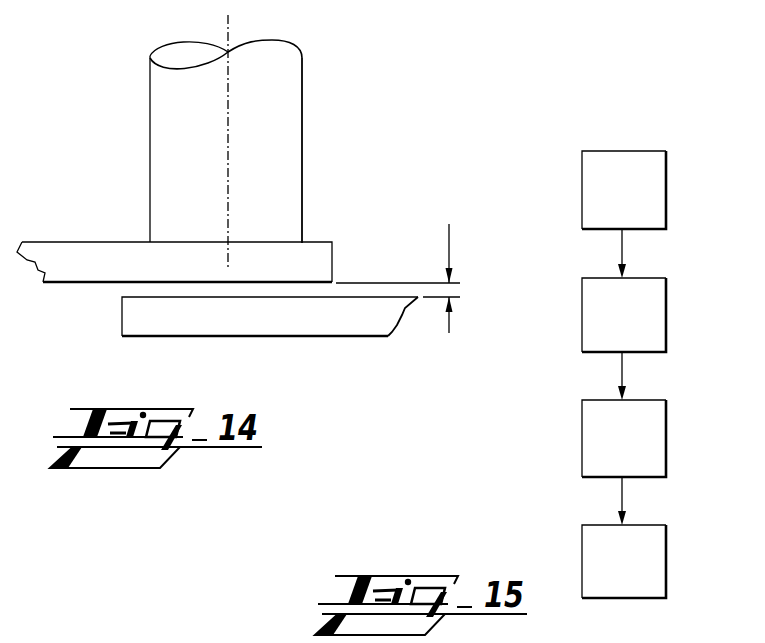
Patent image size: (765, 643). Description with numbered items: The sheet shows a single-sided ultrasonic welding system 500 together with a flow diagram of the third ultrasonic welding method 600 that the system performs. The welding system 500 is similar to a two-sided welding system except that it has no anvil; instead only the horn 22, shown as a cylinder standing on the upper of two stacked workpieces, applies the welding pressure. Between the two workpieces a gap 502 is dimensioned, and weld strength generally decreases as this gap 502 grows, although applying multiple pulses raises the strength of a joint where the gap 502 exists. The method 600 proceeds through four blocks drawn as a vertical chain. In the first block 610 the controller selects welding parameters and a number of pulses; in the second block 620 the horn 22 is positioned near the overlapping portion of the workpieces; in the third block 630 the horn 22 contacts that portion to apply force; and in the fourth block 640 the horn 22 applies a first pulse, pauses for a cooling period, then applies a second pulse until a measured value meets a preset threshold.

In FIG. 14, the horn 22 is at (208, 158).
In FIG. 14, the welding system 500 is at (219, 175).
In FIG. 14, the gap 502 is at (449, 224).
In FIG. 15, the third ultrasonic welding method 600 is at (662, 333).
In FIG. 15, the first block 610 is at (643, 200).
In FIG. 15, the second block 620 is at (643, 327).
In FIG. 15, the third block 630 is at (643, 450).
In FIG. 15, the fourth block 640 is at (643, 575).